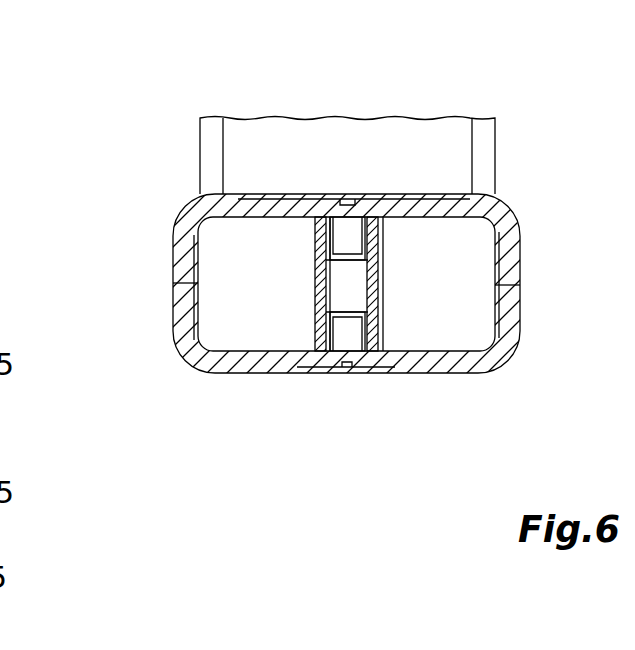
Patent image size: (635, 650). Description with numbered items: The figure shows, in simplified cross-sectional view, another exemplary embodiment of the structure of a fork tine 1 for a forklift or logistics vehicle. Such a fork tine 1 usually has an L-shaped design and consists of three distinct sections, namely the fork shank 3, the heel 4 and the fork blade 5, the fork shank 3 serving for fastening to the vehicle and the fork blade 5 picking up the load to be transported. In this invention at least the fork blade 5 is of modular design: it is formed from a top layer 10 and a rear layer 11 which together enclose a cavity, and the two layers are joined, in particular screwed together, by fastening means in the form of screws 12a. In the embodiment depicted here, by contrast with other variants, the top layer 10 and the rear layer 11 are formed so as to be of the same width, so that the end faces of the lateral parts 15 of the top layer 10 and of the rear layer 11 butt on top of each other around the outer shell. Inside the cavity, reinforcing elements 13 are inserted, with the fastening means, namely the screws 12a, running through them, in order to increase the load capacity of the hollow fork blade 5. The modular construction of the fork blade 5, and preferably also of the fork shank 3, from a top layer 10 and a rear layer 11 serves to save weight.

The fork tine 1 is at (158, 185).
The fork shank 3 is at (360, 147).
The heel 4 is at (444, 294).
The fork blade 5 is at (510, 205).
The top layer 10 is at (427, 205).
The rear layer 11 is at (267, 358).
The screws 12a is at (333, 207).
The reinforcing elements 13 is at (338, 292).
The lateral parts 15 is at (185, 247).